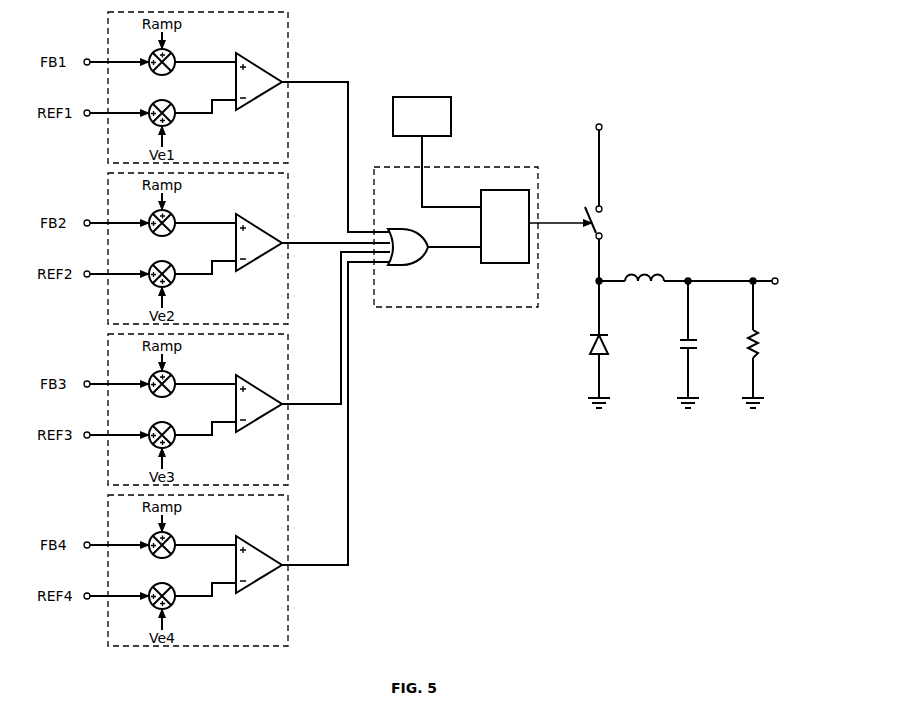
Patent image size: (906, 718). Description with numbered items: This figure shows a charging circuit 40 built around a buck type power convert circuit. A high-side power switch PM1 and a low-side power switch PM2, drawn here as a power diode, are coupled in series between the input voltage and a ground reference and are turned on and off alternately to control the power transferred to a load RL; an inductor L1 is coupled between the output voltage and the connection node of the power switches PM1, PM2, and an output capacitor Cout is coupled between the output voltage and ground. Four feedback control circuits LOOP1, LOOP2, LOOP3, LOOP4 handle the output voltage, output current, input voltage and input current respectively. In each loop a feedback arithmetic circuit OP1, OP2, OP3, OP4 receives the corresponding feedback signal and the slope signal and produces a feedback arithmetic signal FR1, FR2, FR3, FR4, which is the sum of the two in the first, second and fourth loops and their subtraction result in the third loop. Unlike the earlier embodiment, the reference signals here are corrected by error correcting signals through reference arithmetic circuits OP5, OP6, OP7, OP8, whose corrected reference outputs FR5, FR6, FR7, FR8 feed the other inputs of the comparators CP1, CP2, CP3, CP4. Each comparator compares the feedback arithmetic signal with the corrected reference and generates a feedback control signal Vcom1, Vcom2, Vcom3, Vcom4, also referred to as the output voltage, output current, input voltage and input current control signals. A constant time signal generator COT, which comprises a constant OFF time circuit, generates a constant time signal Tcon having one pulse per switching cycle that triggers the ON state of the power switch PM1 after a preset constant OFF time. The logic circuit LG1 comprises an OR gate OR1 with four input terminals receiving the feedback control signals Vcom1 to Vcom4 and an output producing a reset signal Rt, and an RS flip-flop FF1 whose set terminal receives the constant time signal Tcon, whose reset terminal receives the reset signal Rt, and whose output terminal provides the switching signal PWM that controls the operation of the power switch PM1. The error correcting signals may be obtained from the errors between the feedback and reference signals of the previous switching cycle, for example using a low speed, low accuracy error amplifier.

The charging circuit 40 is at (710, 72).
The first feedback control circuit LOOP1 is at (283, 33).
The second feedback control circuit LOOP2 is at (283, 194).
The third feedback control circuit LOOP3 is at (283, 355).
The fourth feedback control circuit LOOP4 is at (283, 516).
The feedback arithmetic circuit OP1 is at (163, 76).
The feedback arithmetic circuit OP2 is at (163, 237).
The feedback arithmetic circuit OP3 is at (163, 398).
The feedback arithmetic circuit OP4 is at (163, 559).
The reference arithmetic circuit OP5 is at (173, 103).
The reference arithmetic circuit OP6 is at (173, 264).
The reference arithmetic circuit OP7 is at (173, 425).
The reference arithmetic circuit OP8 is at (173, 586).
The first comparator CP1 is at (259, 81).
The second comparator CP2 is at (259, 242).
The third comparator CP3 is at (259, 403).
The fourth comparator CP4 is at (259, 564).
The feedback arithmetic signal FR1 is at (205, 52).
The feedback arithmetic signal FR2 is at (205, 213).
The feedback arithmetic signal FR3 is at (205, 374).
The feedback arithmetic signal FR4 is at (205, 535).
The fifth reference error signal FR5 is at (205, 118).
The sixth reference error signal FR6 is at (205, 279).
The seventh reference error signal FR7 is at (205, 440).
The eighth reference error signal FR8 is at (205, 601).
The first feedback control signal Vcom1 is at (336, 148).
The second feedback control signal Vcom2 is at (336, 234).
The third feedback control signal Vcom3 is at (336, 328).
The fourth feedback control signal Vcom4 is at (336, 413).
The constant time signal generator COT is at (422, 116).
The constant time signal Tcon is at (451, 171).
The logic circuit LG1 is at (442, 300).
The OR gate OR1 is at (408, 247).
The reset signal Rt is at (454, 238).
The RS flip-flop FF1 is at (505, 218).
The switching signal PWM is at (560, 214).
The power switch PM1 is at (613, 222).
The power switch PM2 is at (618, 371).
The inductor L1 is at (631, 269).
The output capacitor Cout is at (705, 344).
The load RL is at (760, 344).